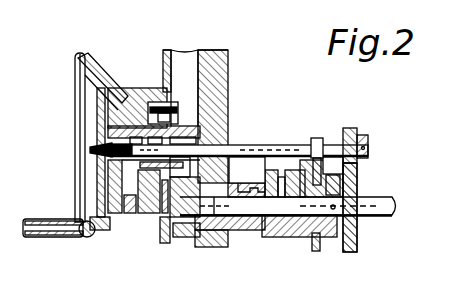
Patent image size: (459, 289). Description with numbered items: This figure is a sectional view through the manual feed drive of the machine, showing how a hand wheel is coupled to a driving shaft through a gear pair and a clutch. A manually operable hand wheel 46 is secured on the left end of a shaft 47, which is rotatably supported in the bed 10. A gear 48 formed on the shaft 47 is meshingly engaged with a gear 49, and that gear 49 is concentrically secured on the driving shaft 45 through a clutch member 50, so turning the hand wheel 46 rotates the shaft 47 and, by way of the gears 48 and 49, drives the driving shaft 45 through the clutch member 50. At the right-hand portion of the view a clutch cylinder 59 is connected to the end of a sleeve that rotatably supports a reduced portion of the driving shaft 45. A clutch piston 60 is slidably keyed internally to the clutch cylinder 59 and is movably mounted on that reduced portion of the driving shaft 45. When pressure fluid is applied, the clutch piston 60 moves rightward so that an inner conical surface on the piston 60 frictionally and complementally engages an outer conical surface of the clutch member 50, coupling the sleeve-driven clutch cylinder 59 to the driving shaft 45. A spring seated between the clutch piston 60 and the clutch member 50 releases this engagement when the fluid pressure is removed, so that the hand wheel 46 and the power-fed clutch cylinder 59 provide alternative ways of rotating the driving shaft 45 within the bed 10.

The bed 10 is at (230, 82).
The driving shaft 45 is at (384, 203).
The hand wheel 46 is at (88, 58).
The shaft 47 is at (252, 145).
The gear 48 is at (318, 138).
The gear 49 is at (333, 190).
The clutch member 50 is at (357, 182).
The clutch cylinder 59 is at (268, 172).
The clutch piston 60 is at (283, 196).